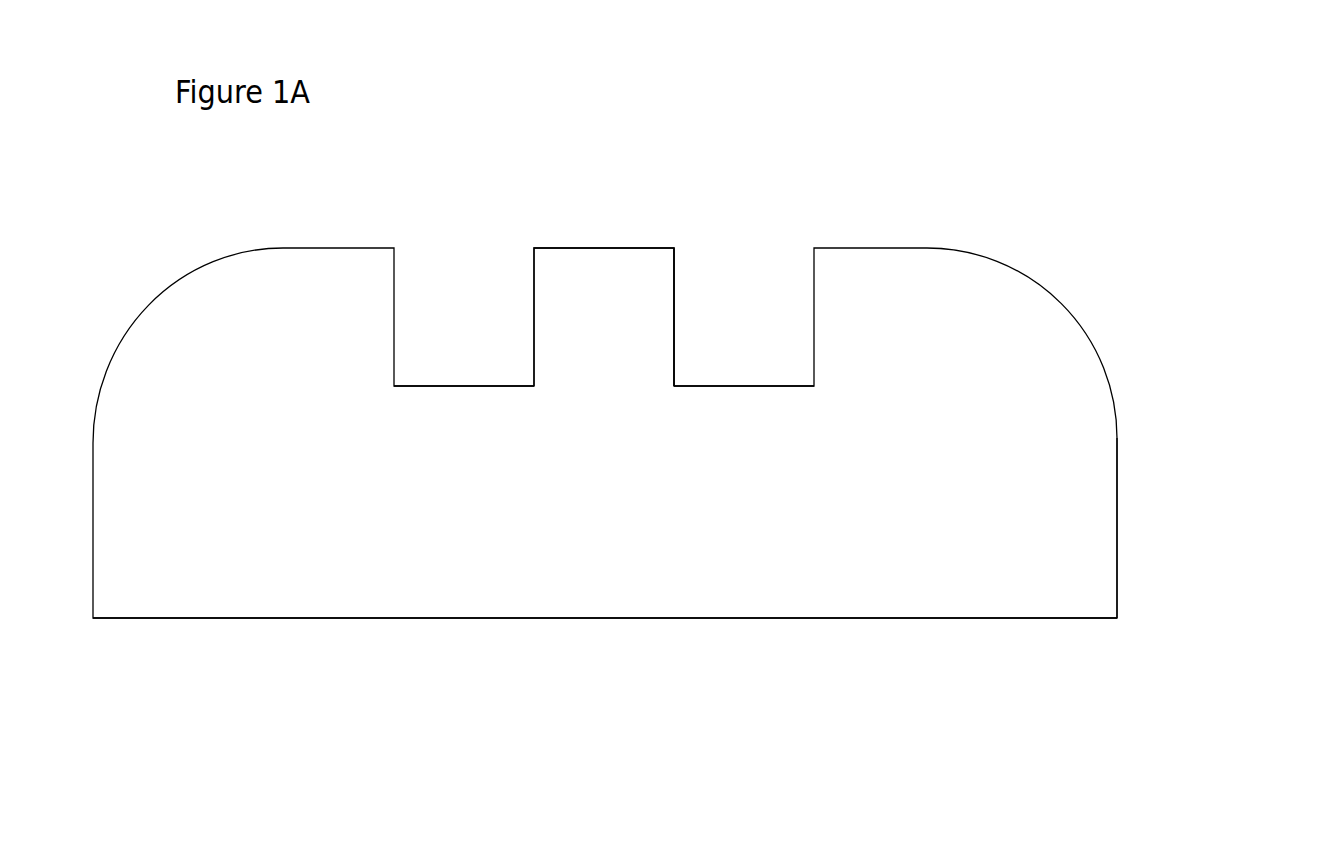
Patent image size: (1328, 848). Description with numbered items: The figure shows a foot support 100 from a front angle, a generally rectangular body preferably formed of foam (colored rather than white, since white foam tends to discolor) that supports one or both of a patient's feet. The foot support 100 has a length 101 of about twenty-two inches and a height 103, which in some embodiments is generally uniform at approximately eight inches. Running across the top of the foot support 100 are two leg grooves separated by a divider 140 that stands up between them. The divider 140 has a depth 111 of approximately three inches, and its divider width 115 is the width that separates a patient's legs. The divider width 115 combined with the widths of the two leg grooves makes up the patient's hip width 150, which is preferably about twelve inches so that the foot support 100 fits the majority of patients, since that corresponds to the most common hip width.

The foot support 100 is at (880, 202).
The length 101 is at (638, 643).
The height 103 is at (1132, 434).
The depth 111 is at (673, 317).
The divider width 115 is at (747, 388).
The divider 140 is at (605, 248).
The patient's hip width 150 is at (893, 537).